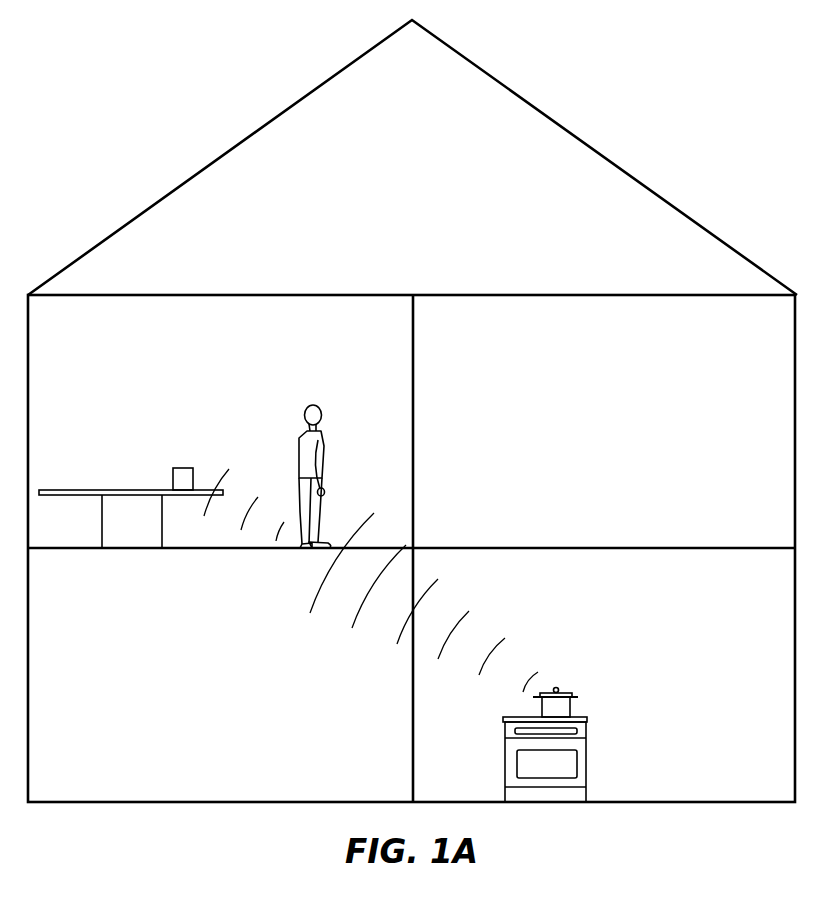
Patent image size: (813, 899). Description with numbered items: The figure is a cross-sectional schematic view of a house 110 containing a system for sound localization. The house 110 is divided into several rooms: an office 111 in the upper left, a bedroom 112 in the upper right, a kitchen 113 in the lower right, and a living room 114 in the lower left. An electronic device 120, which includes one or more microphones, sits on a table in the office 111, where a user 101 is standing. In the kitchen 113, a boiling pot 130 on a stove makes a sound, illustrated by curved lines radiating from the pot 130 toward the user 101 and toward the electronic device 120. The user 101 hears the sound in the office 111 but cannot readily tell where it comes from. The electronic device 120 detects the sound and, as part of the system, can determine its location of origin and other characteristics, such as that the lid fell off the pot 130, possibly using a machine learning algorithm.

The house 110 is at (139, 169).
The office 111 is at (248, 356).
The bedroom 112 is at (625, 424).
The kitchen 113 is at (707, 618).
The living room 114 is at (227, 690).
The user 101 is at (314, 404).
The electronic device 120 is at (183, 468).
The boiling pot 130 is at (567, 693).